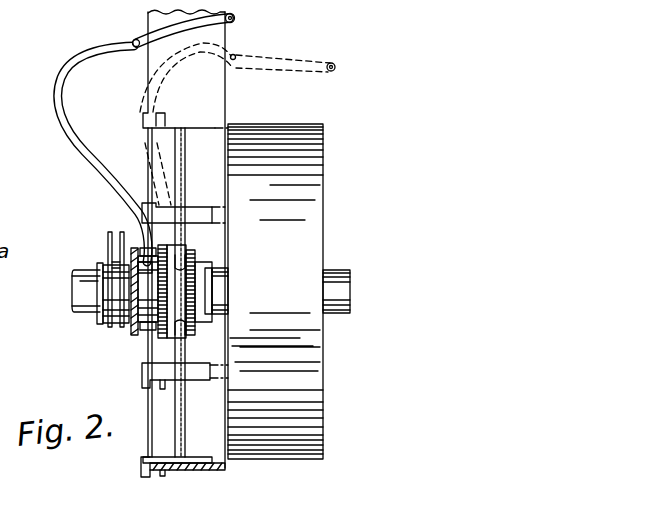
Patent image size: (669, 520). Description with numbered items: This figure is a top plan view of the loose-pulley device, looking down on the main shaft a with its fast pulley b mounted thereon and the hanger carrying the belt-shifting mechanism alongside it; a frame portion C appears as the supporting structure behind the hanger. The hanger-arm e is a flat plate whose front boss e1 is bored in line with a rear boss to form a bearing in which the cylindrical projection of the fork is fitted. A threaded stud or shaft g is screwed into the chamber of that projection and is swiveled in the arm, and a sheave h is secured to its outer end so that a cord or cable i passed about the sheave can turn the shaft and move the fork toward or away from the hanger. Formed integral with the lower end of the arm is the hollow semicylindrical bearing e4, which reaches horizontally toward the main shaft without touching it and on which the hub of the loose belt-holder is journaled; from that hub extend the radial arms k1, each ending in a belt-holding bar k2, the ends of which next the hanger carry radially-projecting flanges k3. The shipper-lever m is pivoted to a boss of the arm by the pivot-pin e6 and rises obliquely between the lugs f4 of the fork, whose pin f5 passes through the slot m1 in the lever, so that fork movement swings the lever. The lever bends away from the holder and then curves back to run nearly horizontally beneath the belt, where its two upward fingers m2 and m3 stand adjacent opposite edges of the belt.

The main shaft a is at (344, 270).
The fast pulley b is at (320, 170).
The frame C is at (214, 108).
The hanger-arm e is at (137, 334).
The boss e1 is at (131, 330).
The hollow semicylindrical bearing e4 is at (218, 268).
The pivot-pin e6 is at (146, 335).
The lugs f4 is at (160, 268).
The pin f5 is at (100, 270).
The stud or shaft g is at (100, 292).
The sheave h is at (108, 320).
The cord or cable i is at (108, 236).
The radial arms k1 is at (183, 425).
The belt-holding bar k2 is at (199, 458).
The radially-projecting flanges k3 is at (142, 470).
The shipper-lever m is at (72, 132).
The slot m1 is at (148, 266).
The arm or finger m2 is at (130, 40).
The arm or finger m3 is at (240, 17).